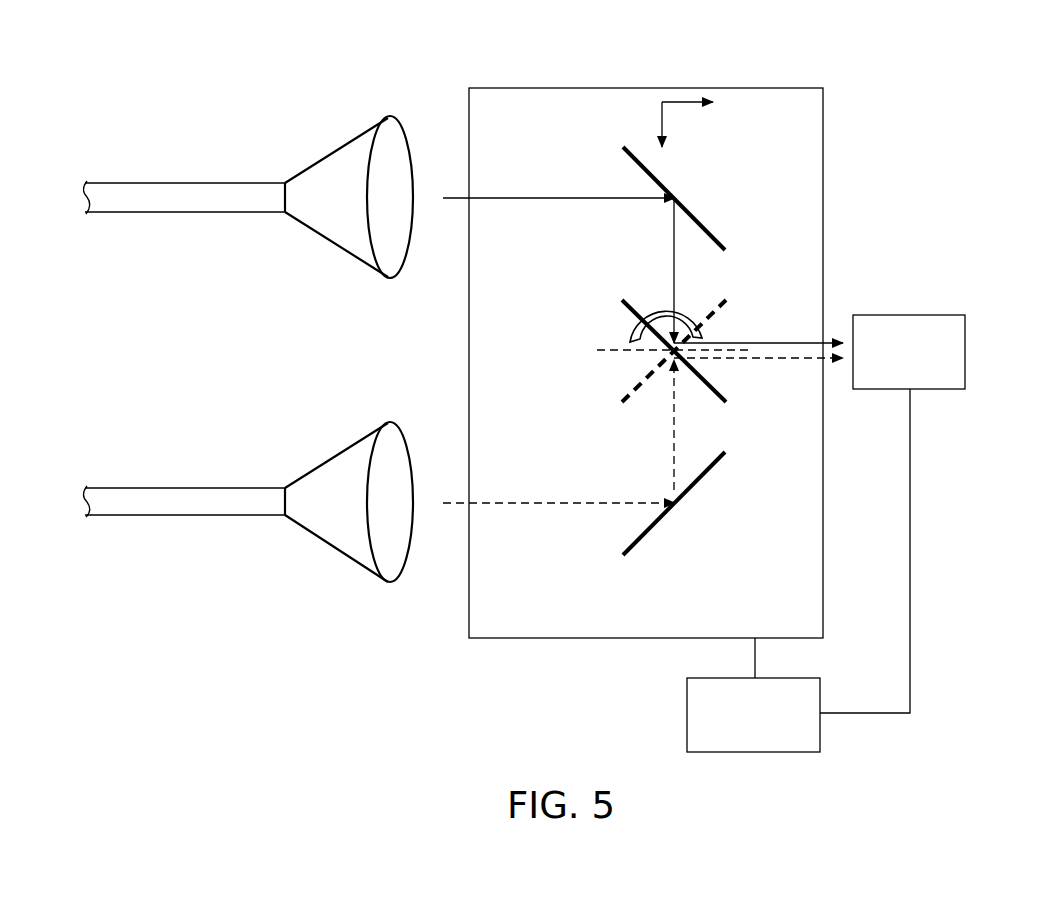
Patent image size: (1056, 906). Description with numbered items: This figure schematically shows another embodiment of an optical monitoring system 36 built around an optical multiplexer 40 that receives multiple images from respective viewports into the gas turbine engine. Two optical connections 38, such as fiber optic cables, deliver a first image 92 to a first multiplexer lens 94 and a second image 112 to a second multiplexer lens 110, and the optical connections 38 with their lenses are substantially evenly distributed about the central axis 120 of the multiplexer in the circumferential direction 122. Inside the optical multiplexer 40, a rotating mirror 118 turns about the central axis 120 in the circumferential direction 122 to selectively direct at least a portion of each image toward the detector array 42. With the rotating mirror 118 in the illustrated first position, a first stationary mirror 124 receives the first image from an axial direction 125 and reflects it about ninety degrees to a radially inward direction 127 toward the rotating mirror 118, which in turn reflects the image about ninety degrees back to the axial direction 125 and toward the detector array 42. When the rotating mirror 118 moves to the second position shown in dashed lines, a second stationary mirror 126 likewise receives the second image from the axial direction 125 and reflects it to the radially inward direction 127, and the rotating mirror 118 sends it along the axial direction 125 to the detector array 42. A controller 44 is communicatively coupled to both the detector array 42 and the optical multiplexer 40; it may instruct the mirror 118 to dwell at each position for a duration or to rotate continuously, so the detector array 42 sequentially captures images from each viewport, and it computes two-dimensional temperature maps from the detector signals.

The optical monitoring system 36 is at (966, 178).
The optical connection 38 is at (192, 181).
The optical multiplexer 40 is at (675, 46).
The detector array 42 is at (965, 360).
The controller 44 is at (687, 715).
The first image 92 is at (333, 150).
The first multiplexer lens 94 is at (390, 115).
The second multiplexer lens 110 is at (390, 422).
The second image 112 is at (333, 455).
The rotating mirror 118 is at (717, 390).
The central axis 120 is at (603, 350).
The circumferential direction 122 is at (652, 295).
The first stationary mirror 124 is at (708, 227).
The axial direction 125 is at (695, 103).
The second stationary mirror 126 is at (700, 482).
The radially inward direction 127 is at (660, 123).